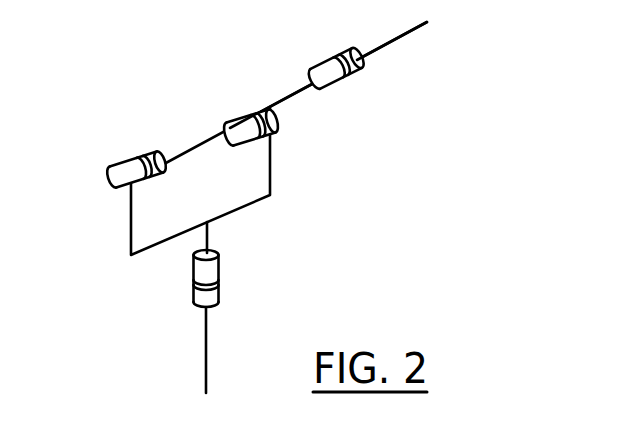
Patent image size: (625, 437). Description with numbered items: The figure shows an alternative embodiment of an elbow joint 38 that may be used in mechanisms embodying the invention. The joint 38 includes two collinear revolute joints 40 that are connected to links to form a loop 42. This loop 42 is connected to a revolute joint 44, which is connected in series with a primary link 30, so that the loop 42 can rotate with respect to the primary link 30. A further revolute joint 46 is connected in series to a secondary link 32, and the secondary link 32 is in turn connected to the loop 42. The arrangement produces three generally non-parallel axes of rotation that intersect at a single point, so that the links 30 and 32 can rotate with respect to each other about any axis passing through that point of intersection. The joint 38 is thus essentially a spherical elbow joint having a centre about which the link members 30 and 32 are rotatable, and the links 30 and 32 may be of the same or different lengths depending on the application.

The primary link 30 is at (207, 365).
The secondary link 32 is at (403, 38).
The joint 38 is at (450, 150).
The collinear revolute joints 40 is at (123, 162).
The loop 42 is at (130, 203).
The revolute joint 44 is at (220, 298).
The revolute joint 46 is at (343, 48).